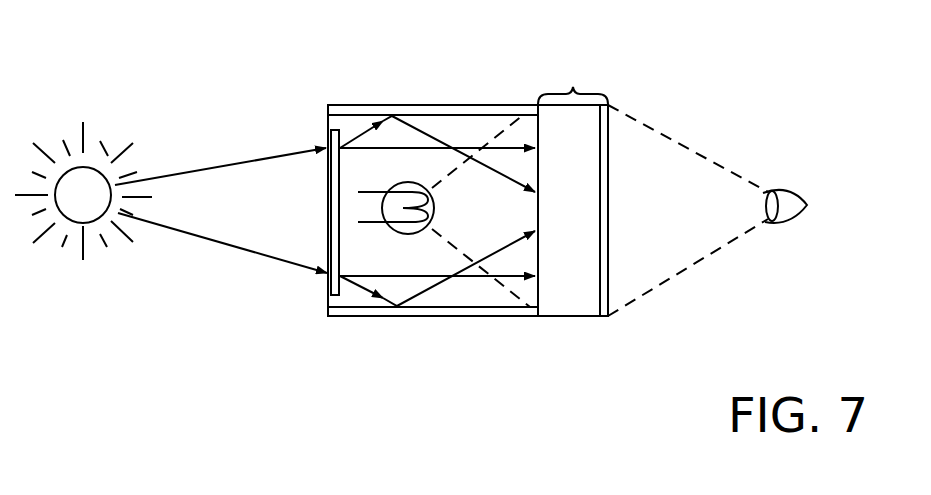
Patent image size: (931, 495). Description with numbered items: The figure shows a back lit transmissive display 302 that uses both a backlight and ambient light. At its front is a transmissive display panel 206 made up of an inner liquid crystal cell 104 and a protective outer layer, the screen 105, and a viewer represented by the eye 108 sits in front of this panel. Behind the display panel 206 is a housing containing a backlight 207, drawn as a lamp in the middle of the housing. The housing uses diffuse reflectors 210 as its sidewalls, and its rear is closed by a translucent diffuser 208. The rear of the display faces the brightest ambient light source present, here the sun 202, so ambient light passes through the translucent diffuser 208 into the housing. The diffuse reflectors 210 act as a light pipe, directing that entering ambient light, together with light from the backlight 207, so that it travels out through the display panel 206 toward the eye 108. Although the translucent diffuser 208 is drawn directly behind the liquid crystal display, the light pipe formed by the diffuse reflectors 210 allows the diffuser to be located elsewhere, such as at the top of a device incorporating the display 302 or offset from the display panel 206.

The liquid crystal cell 104 is at (570, 308).
The screen 105 is at (620, 298).
The eye 108 is at (778, 190).
The sun 202 is at (78, 224).
The display panel 206 is at (624, 217).
The backlight 207 is at (420, 234).
The translucent diffuser 208 is at (328, 178).
The diffuse reflectors 210 is at (497, 105).
The back lit transmissive display 302 is at (723, 92).